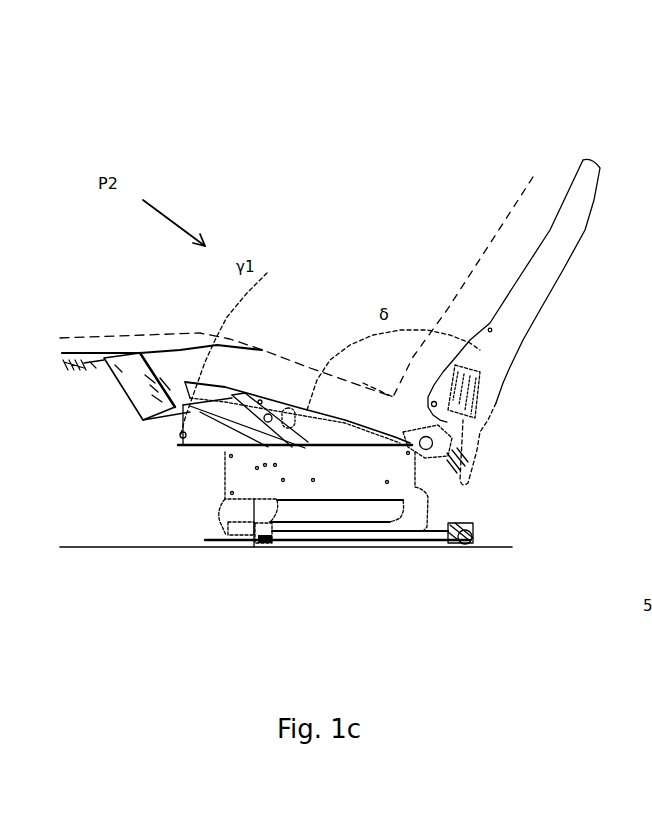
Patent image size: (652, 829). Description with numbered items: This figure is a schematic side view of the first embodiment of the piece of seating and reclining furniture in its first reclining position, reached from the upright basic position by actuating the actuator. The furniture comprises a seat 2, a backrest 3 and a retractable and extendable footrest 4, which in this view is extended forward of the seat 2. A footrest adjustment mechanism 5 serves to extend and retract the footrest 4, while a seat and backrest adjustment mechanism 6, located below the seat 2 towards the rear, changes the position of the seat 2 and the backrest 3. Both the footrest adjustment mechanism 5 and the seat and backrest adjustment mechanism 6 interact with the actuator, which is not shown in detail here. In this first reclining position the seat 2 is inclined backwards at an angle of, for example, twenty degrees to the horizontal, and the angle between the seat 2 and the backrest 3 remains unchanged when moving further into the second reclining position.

The seat 2 is at (268, 398).
The backrest 3 is at (590, 166).
The footrest 4 is at (82, 365).
The footrest adjustment mechanism 5 is at (220, 428).
The seat and backrest adjustment mechanism 6 is at (432, 450).